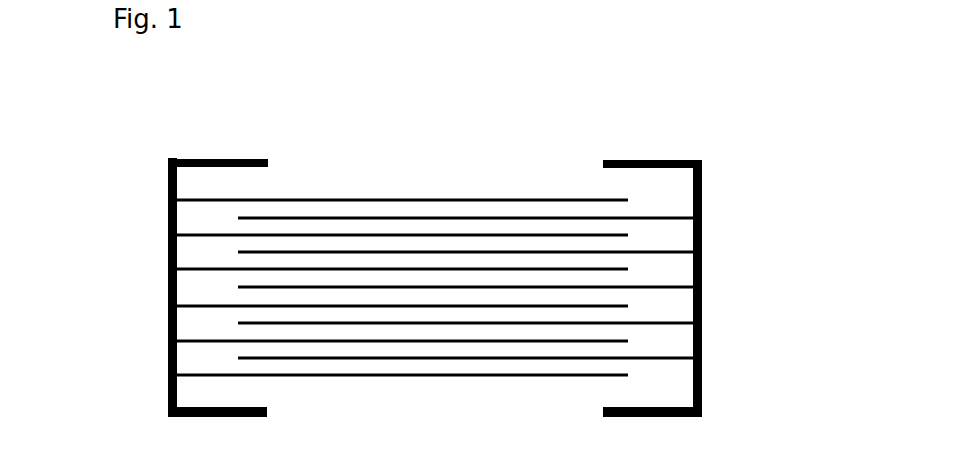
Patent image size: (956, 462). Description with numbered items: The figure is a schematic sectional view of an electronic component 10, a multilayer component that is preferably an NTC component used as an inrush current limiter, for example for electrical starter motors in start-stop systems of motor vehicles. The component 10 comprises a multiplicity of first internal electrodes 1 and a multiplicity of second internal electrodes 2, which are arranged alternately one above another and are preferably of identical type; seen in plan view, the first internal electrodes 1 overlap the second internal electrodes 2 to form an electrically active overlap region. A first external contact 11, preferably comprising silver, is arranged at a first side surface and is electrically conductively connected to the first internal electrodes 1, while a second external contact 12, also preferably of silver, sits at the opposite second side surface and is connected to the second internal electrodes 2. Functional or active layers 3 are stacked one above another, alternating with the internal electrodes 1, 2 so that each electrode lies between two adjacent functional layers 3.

The electronic component 10 is at (453, 108).
The first external contact 11 is at (168, 177).
The second external contact 12 is at (706, 160).
The first internal electrodes 1 is at (192, 338).
The second internal electrodes 2 is at (653, 318).
The functional layers 3 is at (568, 363).